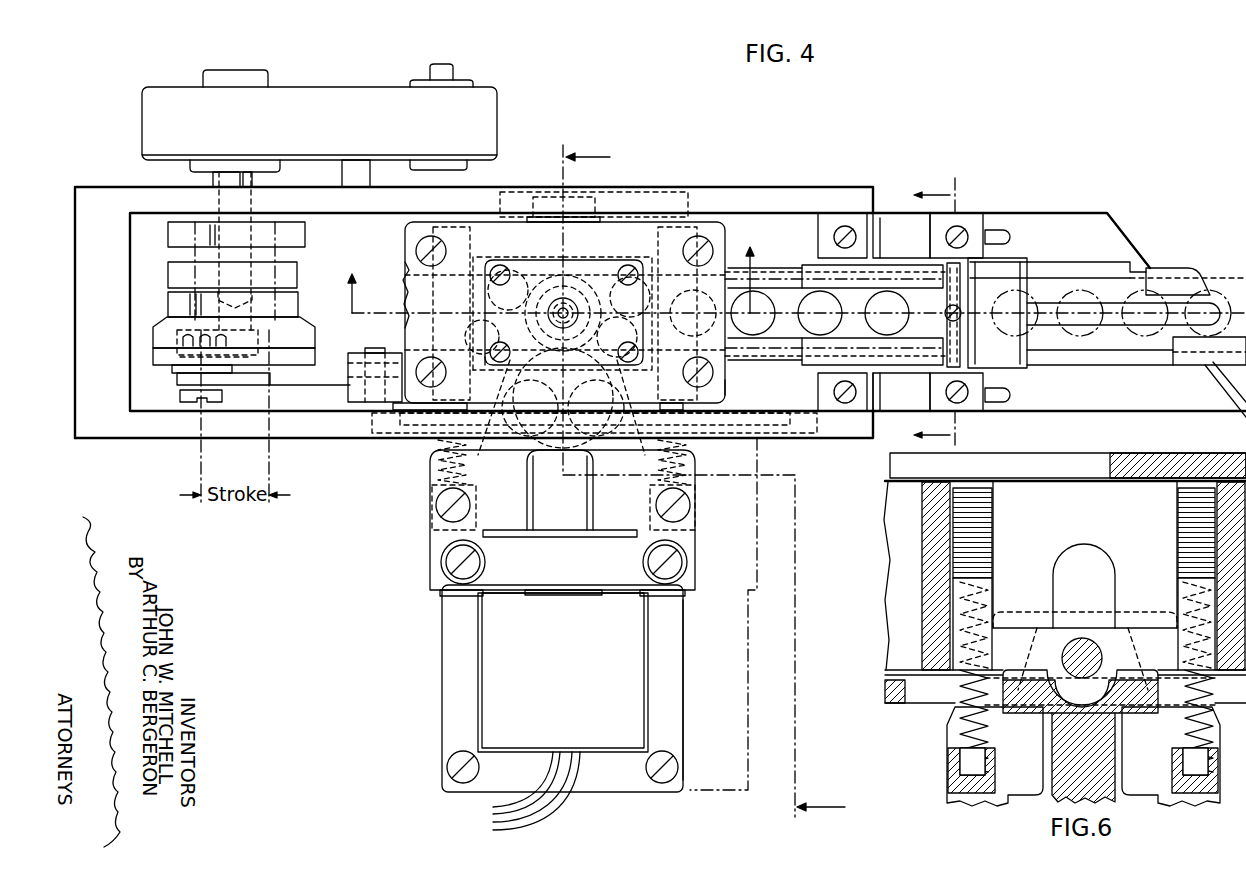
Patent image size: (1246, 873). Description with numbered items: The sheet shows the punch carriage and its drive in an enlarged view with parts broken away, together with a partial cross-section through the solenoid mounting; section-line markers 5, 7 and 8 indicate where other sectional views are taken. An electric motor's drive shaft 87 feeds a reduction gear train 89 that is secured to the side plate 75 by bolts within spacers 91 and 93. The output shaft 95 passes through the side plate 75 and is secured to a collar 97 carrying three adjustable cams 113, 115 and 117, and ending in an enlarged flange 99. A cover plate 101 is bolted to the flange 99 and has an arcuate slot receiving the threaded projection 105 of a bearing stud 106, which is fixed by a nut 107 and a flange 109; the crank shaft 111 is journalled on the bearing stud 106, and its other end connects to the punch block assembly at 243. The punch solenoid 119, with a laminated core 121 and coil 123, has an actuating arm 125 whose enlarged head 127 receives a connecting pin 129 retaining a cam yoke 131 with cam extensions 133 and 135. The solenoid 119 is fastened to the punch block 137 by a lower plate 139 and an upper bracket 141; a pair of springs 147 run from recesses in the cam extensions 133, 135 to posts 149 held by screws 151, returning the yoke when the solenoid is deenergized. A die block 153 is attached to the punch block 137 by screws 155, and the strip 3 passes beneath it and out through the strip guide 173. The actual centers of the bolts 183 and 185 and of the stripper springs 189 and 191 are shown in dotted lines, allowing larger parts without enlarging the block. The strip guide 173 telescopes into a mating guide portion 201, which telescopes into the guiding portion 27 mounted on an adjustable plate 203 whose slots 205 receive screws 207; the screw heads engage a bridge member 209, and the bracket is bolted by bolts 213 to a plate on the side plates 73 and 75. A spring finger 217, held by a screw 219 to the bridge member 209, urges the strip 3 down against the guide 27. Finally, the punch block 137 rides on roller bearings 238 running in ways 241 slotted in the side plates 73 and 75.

In FIG. 4, the strip 3 is at (401, 270).
In FIG. 4, the section line 5 is at (714, 486).
In FIG. 4, the section line 7 is at (925, 312).
In FIG. 4, the section line 8 is at (550, 267).
In FIG. 4, the guiding portion 27 is at (1176, 285).
In FIG. 4, the side plate 73 is at (120, 441).
In FIG. 6, the side plate 73 is at (898, 703).
In FIG. 4, the side plate 75 is at (114, 188).
In FIG. 6, the side plate 75 is at (1158, 453).
In FIG. 4, the drive shaft 87 is at (455, 76).
In FIG. 4, the reduction gear train 89 is at (338, 128).
In FIG. 4, the spacer 91 is at (213, 181).
In FIG. 4, the spacer 93 is at (370, 182).
In FIG. 4, the output shaft 95 is at (252, 180).
In FIG. 4, the collar 97 is at (272, 248).
In FIG. 4, the enlarged flange 99 is at (302, 334).
In FIG. 4, the cover plate 101 is at (312, 356).
In FIG. 4, the threaded projection 105 is at (180, 357).
In FIG. 4, the bearing stud 106 is at (176, 398).
In FIG. 4, the nut 107 is at (180, 338).
In FIG. 4, the flange 109 is at (172, 370).
In FIG. 4, the crank shaft 111 is at (233, 381).
In FIG. 4, the cam 113 is at (168, 241).
In FIG. 4, the cam 115 is at (168, 281).
In FIG. 4, the cam 117 is at (168, 308).
In FIG. 4, the punch solenoid 119 is at (432, 667).
In FIG. 4, the laminated core 121 is at (684, 693).
In FIG. 4, the coil 123 is at (582, 681).
In FIG. 4, the actuating arm 125 is at (585, 523).
In FIG. 6, the actuating arm 125 is at (1052, 785).
In FIG. 4, the enlarged head 127 is at (500, 378).
In FIG. 6, the enlarged head 127 is at (1140, 647).
In FIG. 4, the connecting pin 129 is at (570, 376).
In FIG. 6, the connecting pin 129 is at (1062, 658).
In FIG. 4, the cam yoke 131 is at (568, 414).
In FIG. 6, the cam yoke 131 is at (1140, 621).
In FIG. 4, the cam extension 133 is at (473, 241).
In FIG. 6, the cam extension 133 is at (985, 509).
In FIG. 4, the cam extension 135 is at (652, 241).
In FIG. 6, the cam extension 135 is at (1187, 509).
In FIG. 6, the punch block 137 is at (887, 525).
In FIG. 6, the lower plate 139 is at (950, 735).
In FIG. 4, the upper bracket 141 is at (522, 488).
In FIG. 4, the spring 147 is at (468, 457).
In FIG. 6, the spring 147 is at (983, 739).
In FIG. 4, the post 149 is at (476, 497).
In FIG. 6, the post 149 is at (995, 766).
In FIG. 4, the screw 151 is at (448, 558).
In FIG. 4, the die block 153 is at (722, 380).
In FIG. 4, the screw 155 is at (420, 248).
In FIG. 4, the strip guide 173 is at (782, 277).
In FIG. 4, the bolt 183 is at (512, 271).
In FIG. 4, the bolt 185 is at (628, 374).
In FIG. 4, the stripper spring 189 is at (498, 366).
In FIG. 4, the stripper spring 191 is at (622, 278).
In FIG. 4, the mating guide portion 201 is at (906, 278).
In FIG. 4, the adjustable plate 203 is at (1118, 241).
In FIG. 4, the slot 205 is at (1008, 237).
In FIG. 4, the screw 207 is at (946, 231).
In FIG. 4, the bridge member 209 is at (1005, 394).
In FIG. 4, the bolt 213 is at (834, 238).
In FIG. 4, the spring finger 217 is at (1072, 319).
In FIG. 4, the screw 219 is at (960, 306).
In FIG. 4, the roller bearing 238 is at (530, 195).
In FIG. 4, the way 241 is at (652, 193).
In FIG. 4, the connection of crank shaft to punch block assembly 243 is at (348, 390).